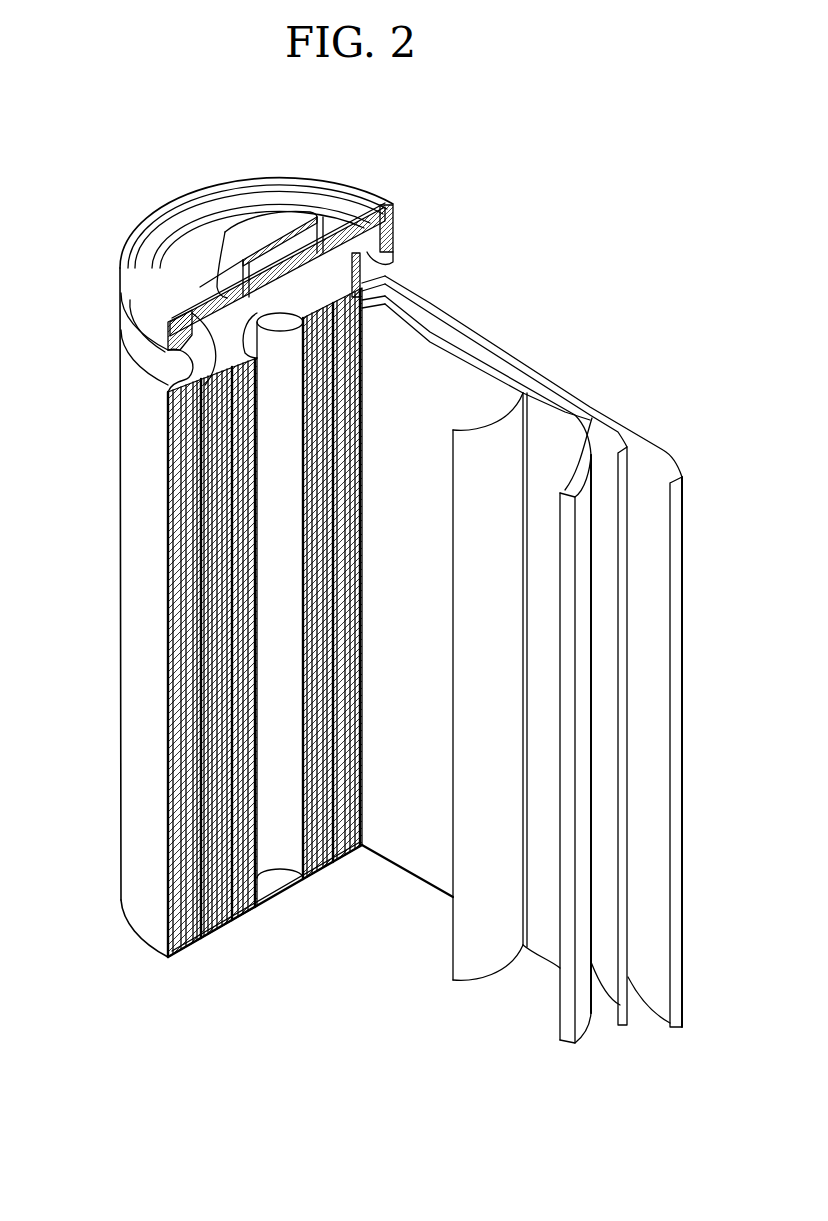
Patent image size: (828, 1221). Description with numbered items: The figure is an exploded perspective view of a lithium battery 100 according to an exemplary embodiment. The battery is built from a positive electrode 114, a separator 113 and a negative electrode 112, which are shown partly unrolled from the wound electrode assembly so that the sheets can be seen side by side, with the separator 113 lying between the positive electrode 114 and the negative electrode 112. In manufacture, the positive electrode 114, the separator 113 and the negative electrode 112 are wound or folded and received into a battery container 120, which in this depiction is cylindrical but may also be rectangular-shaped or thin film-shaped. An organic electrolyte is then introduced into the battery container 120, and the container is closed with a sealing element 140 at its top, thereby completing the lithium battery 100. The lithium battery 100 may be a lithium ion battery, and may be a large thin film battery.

The lithium battery 100 is at (572, 176).
The negative electrode 112 is at (660, 443).
The separator 113 is at (493, 425).
The positive electrode 114 is at (578, 440).
The battery container 120 is at (125, 615).
The sealing element 140 is at (247, 226).